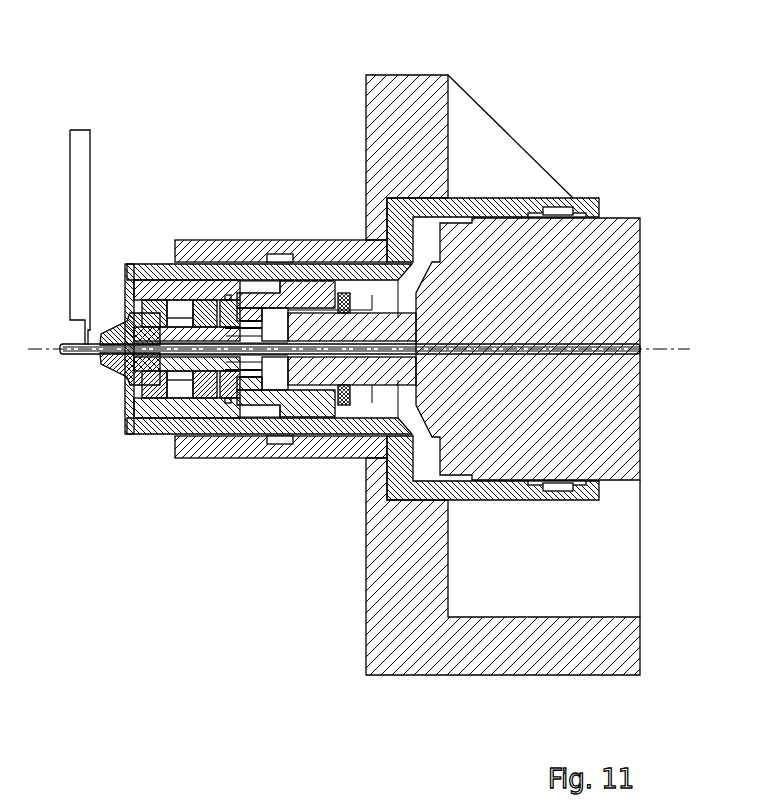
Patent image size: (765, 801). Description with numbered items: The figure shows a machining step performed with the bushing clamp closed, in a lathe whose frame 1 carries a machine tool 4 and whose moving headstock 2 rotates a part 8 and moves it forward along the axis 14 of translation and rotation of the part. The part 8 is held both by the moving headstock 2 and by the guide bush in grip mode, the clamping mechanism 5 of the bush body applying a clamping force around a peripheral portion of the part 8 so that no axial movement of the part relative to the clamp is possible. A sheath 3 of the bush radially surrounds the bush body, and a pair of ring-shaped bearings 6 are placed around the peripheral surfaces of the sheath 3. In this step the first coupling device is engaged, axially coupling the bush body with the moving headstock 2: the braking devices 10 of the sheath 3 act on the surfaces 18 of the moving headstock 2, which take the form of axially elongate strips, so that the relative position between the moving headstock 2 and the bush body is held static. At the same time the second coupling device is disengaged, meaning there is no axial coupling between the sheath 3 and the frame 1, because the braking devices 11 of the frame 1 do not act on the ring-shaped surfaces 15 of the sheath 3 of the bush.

The frame 1 is at (396, 125).
The moving headstock 2 is at (605, 262).
The sheath of the bush 3 is at (478, 202).
The machine tool 4 is at (78, 198).
The clamping mechanism 5 is at (103, 362).
The ring-shaped bearings 6 is at (190, 436).
The part 8 is at (63, 352).
The braking device 10 is at (558, 208).
The braking device 11 is at (276, 254).
The axis 14 is at (678, 332).
The surface 15 is at (253, 258).
The surface 18 is at (537, 215).